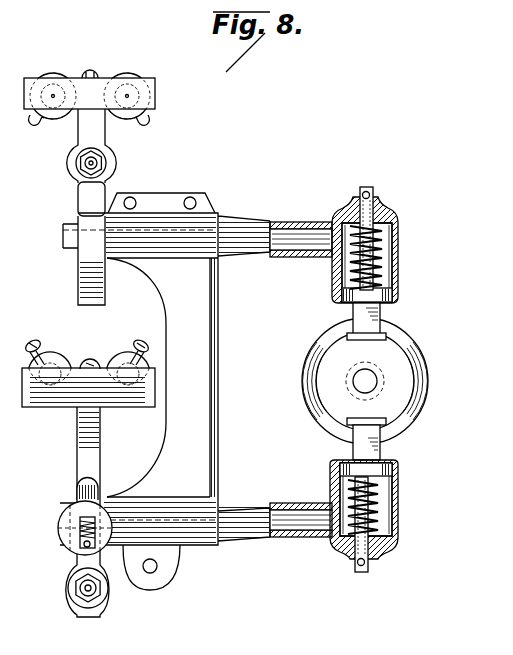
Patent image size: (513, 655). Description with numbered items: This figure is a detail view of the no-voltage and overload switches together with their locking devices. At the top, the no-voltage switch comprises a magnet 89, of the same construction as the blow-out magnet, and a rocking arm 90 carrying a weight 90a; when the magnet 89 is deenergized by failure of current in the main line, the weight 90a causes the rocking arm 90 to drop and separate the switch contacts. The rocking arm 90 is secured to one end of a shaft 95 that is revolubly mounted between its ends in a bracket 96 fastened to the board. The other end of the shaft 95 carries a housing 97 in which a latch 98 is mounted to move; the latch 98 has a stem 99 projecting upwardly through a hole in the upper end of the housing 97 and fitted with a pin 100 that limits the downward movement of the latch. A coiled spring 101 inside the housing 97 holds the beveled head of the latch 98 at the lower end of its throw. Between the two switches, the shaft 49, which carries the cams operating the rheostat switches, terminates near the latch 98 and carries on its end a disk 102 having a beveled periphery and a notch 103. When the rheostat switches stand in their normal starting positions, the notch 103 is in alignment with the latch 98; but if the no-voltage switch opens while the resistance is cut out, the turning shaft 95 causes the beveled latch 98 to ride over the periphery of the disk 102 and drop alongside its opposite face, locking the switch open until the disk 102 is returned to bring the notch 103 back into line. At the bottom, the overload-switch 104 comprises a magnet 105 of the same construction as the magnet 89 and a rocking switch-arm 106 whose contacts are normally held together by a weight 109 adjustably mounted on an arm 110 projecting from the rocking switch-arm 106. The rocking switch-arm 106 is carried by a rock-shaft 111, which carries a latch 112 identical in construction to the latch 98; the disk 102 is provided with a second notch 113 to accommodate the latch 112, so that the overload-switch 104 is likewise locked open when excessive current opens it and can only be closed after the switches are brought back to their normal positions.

The magnet 89 is at (115, 70).
The rocking arm 90 is at (78, 141).
The weight 90a is at (80, 201).
The bracket 96 is at (150, 284).
The shaft 95 is at (294, 230).
The pin 100 is at (359, 193).
The stem 99 is at (373, 191).
The housing 97 is at (398, 221).
The coiled spring 101 is at (382, 253).
The latch 98 is at (380, 314).
The notch 103 is at (352, 326).
The disk 102 is at (332, 358).
The shaft 49 is at (377, 383).
The notch 113 is at (348, 418).
The latch 112 is at (380, 447).
The rock-shaft 111 is at (300, 528).
The magnet 105 is at (118, 357).
The rocking switch-arm 106 is at (102, 445).
The weight 109 is at (77, 503).
The arm 110 is at (80, 546).
The overload-switch 104 is at (73, 578).